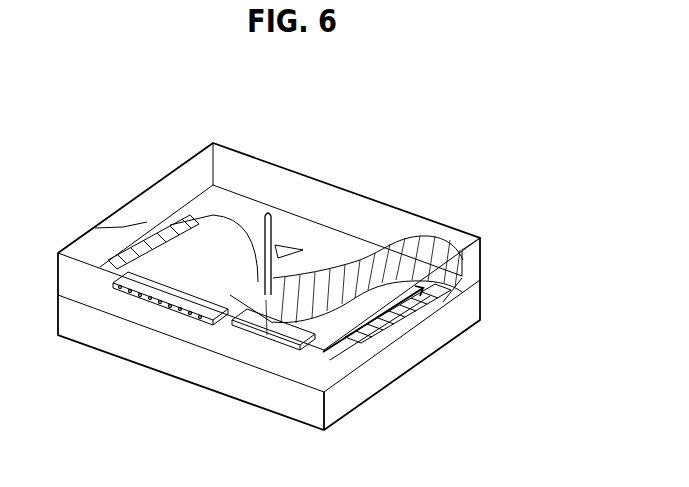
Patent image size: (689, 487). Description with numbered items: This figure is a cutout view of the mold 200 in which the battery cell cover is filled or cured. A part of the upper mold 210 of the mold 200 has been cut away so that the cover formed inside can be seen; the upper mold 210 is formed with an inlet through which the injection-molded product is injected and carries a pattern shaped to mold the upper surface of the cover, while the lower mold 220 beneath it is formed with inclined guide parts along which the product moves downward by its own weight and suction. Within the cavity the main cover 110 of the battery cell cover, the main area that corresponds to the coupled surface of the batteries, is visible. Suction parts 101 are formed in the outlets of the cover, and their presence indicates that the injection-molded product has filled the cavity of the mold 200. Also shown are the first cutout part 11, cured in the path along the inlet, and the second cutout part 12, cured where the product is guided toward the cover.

The mold 200 is at (97, 96).
The upper mold 210 is at (407, 224).
The lower mold 220 is at (358, 392).
The suction part 101 is at (95, 227).
The main cover 110 is at (145, 295).
The first cutout part 11 is at (288, 212).
The second cutout part 12 is at (178, 208).